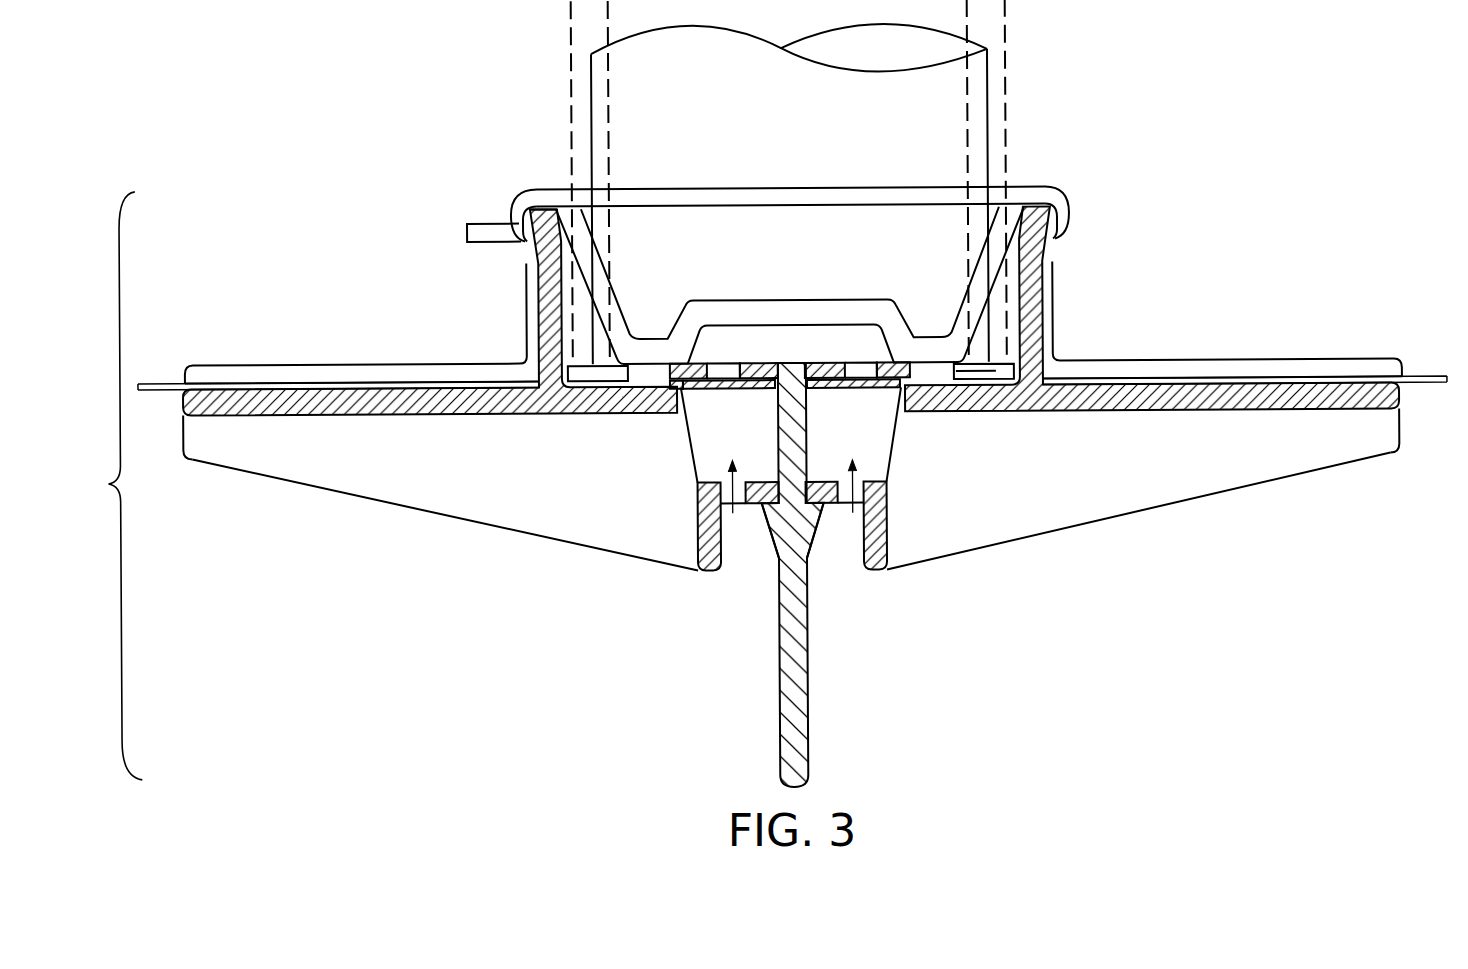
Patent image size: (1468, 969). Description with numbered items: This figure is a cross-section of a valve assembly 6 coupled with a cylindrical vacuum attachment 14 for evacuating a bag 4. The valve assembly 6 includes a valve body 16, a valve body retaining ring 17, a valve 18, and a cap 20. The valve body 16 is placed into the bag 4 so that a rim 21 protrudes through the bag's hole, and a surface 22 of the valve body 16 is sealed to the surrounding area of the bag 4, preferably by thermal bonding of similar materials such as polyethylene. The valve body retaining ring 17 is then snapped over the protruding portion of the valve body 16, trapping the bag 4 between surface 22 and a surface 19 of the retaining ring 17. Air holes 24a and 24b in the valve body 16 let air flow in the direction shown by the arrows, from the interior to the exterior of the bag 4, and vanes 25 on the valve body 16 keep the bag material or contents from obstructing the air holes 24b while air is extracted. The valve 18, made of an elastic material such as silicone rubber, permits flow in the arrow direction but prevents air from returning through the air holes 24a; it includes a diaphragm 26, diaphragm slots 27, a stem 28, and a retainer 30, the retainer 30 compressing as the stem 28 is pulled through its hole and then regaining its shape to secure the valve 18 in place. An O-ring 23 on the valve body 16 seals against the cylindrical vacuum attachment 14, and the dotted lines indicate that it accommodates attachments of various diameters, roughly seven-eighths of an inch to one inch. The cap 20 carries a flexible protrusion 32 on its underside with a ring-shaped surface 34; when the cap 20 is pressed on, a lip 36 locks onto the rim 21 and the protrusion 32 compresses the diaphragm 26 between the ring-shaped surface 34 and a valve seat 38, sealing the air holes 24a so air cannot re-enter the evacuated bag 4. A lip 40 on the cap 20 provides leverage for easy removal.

The bag 4 is at (1413, 375).
The valve assembly 6 is at (114, 486).
The cylindrical vacuum attachment 14 is at (990, 90).
The valve body 16 is at (515, 388).
The valve body retaining ring 17 is at (1093, 370).
The valve 18 is at (838, 388).
The surface of valve body retaining ring 19 is at (1240, 377).
The cap 20 is at (647, 195).
The rim 21 is at (547, 213).
The surface of valve body 22 is at (310, 388).
The O-ring 23 is at (992, 371).
The air holes 24a is at (725, 383).
The air holes 24b is at (845, 492).
The vanes 25 is at (367, 453).
The diaphragm 26 is at (891, 388).
The diaphragm slots 27 is at (685, 390).
The stem 28 is at (795, 663).
The retainer 30 is at (793, 527).
The flexible protrusion 32 is at (603, 290).
The ring-shaped surface 34 is at (648, 350).
The lip 36 is at (520, 212).
The valve seat 38 is at (680, 390).
The lip 40 is at (490, 225).